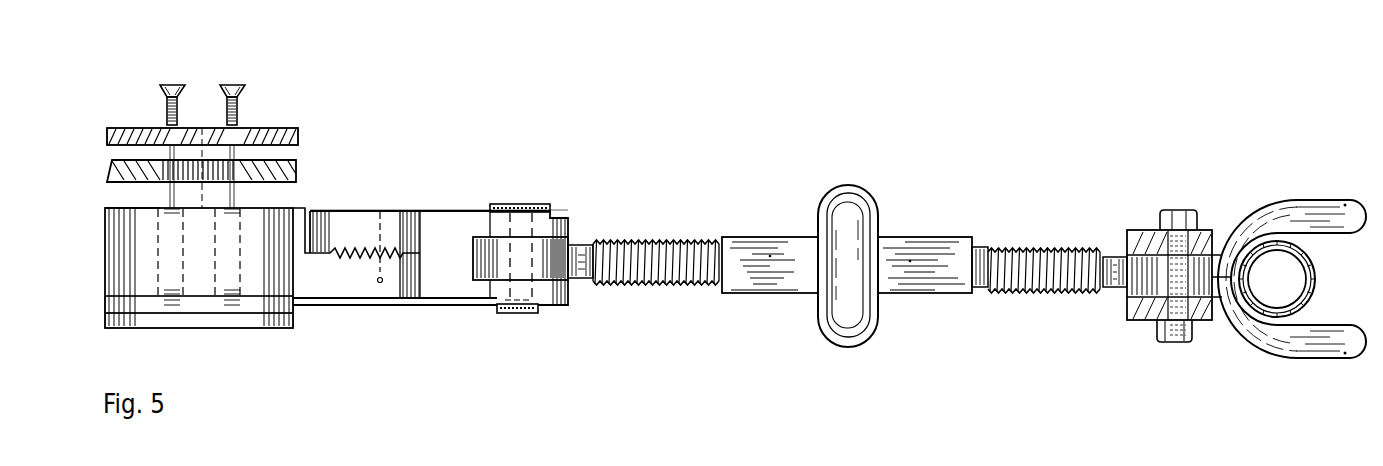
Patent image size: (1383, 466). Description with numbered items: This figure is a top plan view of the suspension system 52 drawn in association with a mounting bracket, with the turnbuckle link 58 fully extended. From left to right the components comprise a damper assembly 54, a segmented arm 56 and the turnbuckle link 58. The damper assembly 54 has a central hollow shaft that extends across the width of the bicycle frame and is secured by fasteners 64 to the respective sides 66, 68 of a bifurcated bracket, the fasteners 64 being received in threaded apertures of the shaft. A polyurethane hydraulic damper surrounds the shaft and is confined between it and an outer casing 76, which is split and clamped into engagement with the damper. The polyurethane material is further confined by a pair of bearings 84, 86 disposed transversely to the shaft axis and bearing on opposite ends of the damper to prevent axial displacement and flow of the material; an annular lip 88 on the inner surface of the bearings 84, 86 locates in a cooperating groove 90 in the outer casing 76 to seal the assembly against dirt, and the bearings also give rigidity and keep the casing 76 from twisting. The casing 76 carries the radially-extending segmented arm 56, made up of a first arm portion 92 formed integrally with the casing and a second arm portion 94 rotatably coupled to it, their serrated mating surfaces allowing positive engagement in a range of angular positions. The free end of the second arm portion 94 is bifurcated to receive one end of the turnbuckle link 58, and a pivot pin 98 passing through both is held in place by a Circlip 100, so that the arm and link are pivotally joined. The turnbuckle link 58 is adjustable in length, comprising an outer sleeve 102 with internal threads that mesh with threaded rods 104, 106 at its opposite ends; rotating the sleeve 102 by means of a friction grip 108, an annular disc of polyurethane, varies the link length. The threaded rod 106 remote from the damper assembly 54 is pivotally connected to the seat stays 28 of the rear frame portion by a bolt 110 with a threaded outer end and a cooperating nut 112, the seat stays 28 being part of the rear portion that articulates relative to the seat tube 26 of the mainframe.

The seat tube 26 is at (1320, 273).
The seat stays 28 is at (1278, 201).
The suspension system 52 is at (519, 131).
The damper assembly 54 is at (268, 28).
The segmented arm 56 is at (424, 322).
The turnbuckle link 58 is at (797, 322).
The fasteners 64 is at (247, 100).
The side of bifurcated bracket 66 is at (300, 138).
The side of bifurcated bracket 68 is at (298, 330).
The outer casing 76 is at (118, 258).
The bearing 84 is at (298, 170).
The bearing 86 is at (298, 307).
The annular lip 88 is at (110, 181).
The groove 90 is at (118, 207).
The first arm portion 92 is at (376, 306).
The second arm portion 94 is at (398, 208).
The pivot pin 98 is at (530, 313).
The Circlip 100 is at (545, 204).
The outer sleeve 102 is at (895, 237).
The threaded rod 104 is at (645, 238).
The threaded rod 106 is at (1005, 247).
The friction grip 108 is at (874, 193).
The bolt 110 is at (1162, 215).
The nut 112 is at (1160, 333).